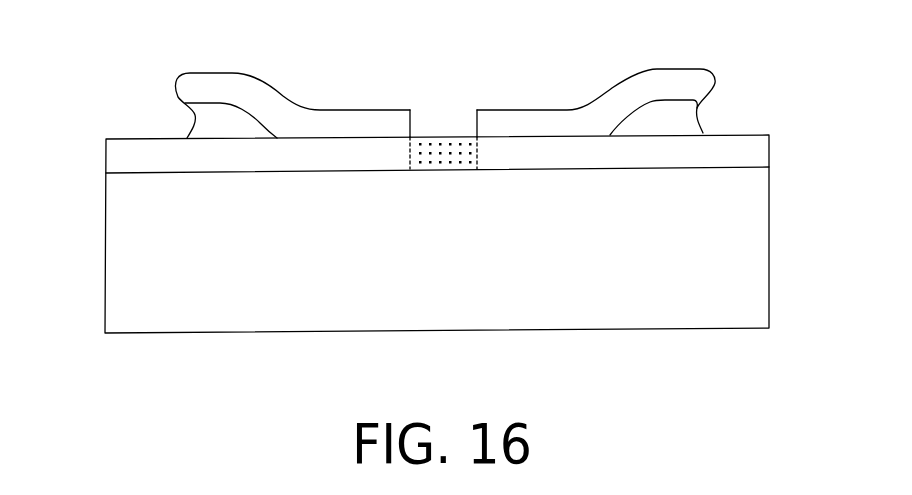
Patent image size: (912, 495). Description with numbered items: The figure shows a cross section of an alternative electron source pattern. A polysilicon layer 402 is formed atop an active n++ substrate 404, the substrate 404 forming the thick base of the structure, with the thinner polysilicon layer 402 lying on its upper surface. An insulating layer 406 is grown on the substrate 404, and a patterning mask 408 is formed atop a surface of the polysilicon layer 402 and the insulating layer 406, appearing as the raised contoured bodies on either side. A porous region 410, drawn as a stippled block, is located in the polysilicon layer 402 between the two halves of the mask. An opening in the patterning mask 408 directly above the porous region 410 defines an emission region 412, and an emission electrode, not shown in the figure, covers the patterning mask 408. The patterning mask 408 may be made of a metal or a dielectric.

The polysilicon layer 402 is at (769, 147).
The active n++ substrate 404 is at (769, 235).
The insulating layer 406 is at (190, 124).
The patterning mask 408 is at (213, 78).
The porous region 410 is at (452, 155).
The emission region 412 is at (452, 108).